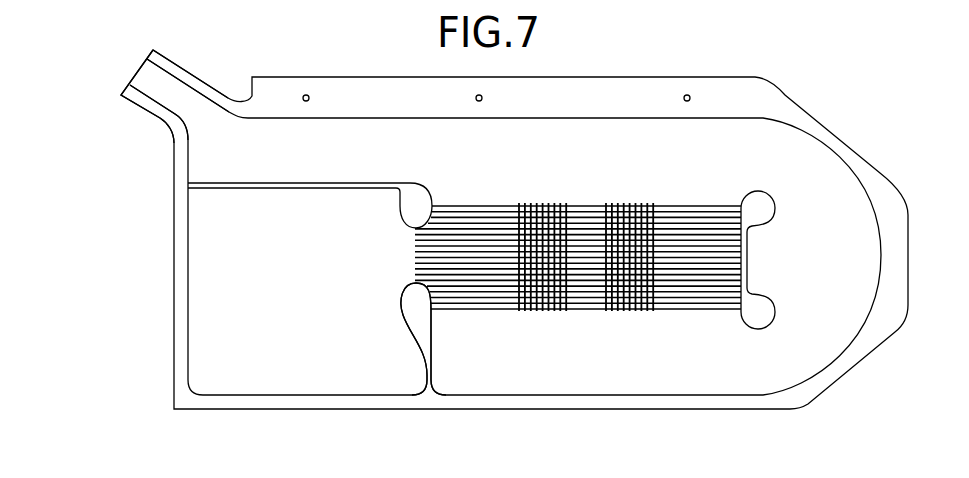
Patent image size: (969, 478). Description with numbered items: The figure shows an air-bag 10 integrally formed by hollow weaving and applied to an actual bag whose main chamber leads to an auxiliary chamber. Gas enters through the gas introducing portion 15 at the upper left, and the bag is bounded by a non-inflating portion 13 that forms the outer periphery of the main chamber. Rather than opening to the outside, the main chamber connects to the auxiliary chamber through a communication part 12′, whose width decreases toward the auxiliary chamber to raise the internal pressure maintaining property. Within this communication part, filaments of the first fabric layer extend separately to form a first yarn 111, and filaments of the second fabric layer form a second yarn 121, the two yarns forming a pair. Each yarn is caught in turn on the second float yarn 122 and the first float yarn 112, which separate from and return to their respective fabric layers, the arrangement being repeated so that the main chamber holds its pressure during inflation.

The air-bag 10 is at (715, 173).
The gas introducing portion 15 is at (162, 86).
The communication part 12′ is at (412, 258).
The non-inflating portion 13 is at (745, 260).
The first yarn 111 is at (578, 238).
The second yarn 121 is at (483, 253).
The first float yarn 112 is at (586, 291).
The second float yarn 122 is at (610, 307).